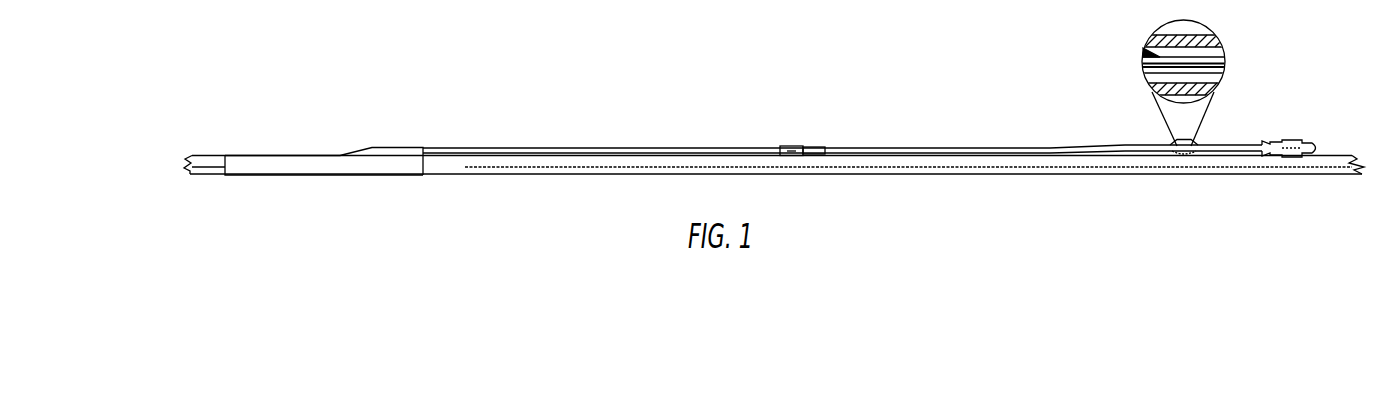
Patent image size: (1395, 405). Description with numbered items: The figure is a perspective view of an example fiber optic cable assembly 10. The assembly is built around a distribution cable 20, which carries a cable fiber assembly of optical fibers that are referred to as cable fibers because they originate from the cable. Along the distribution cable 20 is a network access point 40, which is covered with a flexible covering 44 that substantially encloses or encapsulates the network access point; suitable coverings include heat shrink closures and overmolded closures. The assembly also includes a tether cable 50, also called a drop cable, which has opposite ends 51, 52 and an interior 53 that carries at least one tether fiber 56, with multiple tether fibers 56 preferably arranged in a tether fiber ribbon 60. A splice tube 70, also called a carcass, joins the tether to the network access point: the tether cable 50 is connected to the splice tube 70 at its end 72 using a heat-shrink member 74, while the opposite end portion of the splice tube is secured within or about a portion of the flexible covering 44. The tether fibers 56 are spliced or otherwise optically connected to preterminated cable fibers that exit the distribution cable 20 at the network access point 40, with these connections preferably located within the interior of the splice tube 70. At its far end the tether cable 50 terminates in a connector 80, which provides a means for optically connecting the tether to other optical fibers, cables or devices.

The fiber optic cable assembly 10 is at (647, 77).
The distribution cable 20 is at (201, 177).
The network access point 40 is at (315, 175).
The flexible covering 44 is at (253, 163).
The tether cable 50 is at (1055, 147).
The end 51 is at (830, 146).
The end 52 is at (1222, 143).
The interior 53 is at (1205, 50).
The tether fiber 56 is at (1215, 68).
The tether fiber ribbon 60 is at (1150, 46).
The splice tube 70 is at (731, 146).
The end 72 is at (777, 146).
The heat-shrink member 74 is at (797, 143).
The connector 80 is at (1290, 140).